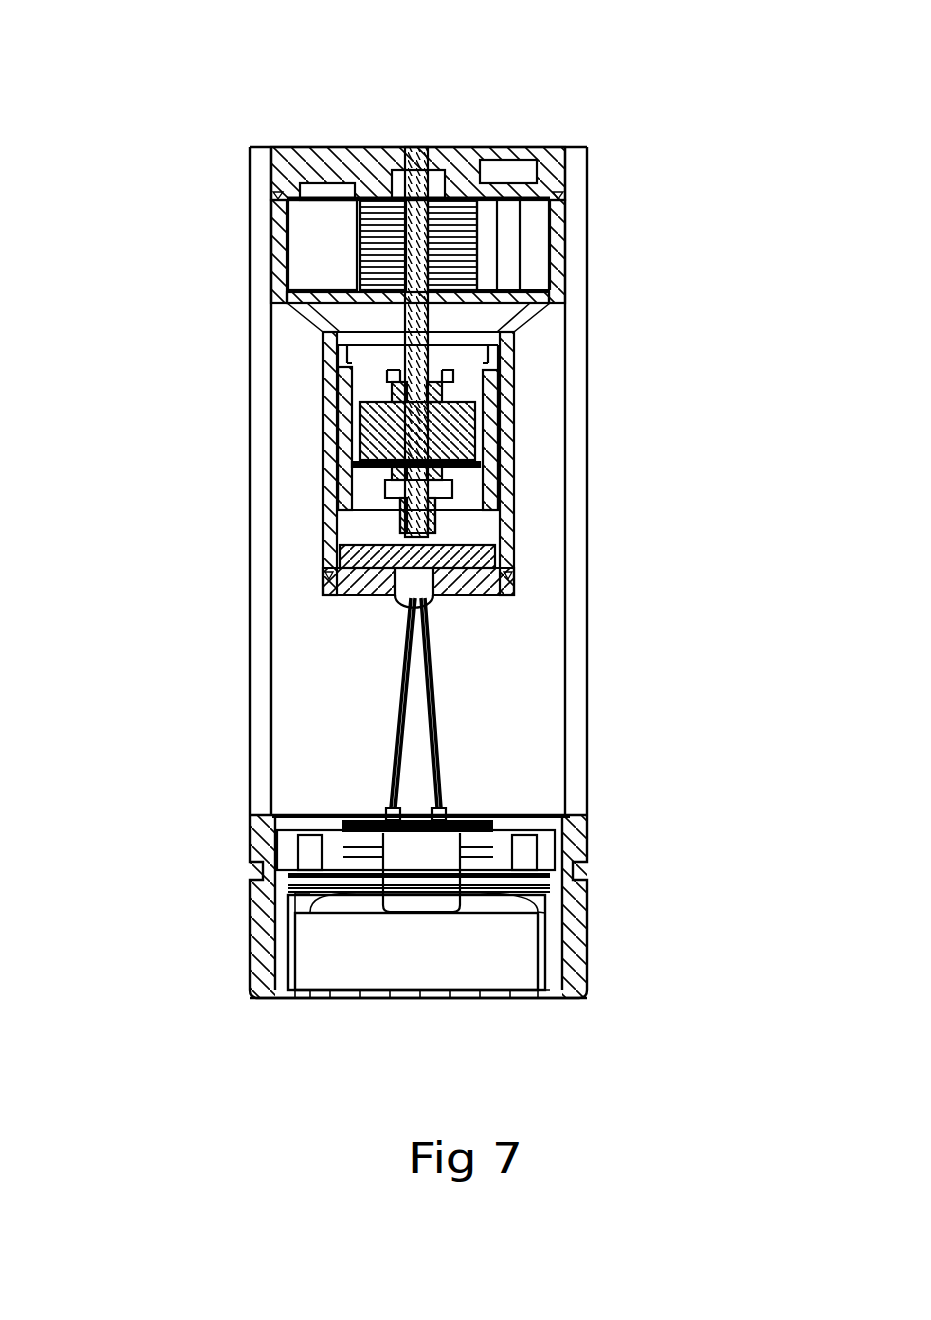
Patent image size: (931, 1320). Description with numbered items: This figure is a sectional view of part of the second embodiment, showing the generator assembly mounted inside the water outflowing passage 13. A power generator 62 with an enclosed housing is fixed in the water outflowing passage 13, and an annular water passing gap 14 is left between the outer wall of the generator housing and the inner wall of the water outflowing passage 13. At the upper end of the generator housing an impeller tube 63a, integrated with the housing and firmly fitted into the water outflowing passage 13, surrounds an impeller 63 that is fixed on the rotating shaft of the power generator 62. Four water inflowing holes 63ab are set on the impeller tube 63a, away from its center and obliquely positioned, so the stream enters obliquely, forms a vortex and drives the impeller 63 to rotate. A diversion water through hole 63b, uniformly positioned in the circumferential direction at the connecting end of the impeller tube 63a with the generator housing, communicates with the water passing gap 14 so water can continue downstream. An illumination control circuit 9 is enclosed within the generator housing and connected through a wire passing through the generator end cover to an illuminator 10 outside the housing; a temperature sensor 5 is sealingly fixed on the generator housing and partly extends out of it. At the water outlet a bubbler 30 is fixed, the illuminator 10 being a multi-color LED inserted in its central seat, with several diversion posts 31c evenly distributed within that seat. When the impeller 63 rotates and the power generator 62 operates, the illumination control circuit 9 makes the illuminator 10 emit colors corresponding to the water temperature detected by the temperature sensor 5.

The water inflowing holes 63ab is at (333, 152).
The impeller tube 63a is at (290, 228).
The impeller 63 is at (500, 240).
The diversion water through hole 63b is at (498, 315).
The power generator 62 is at (507, 427).
The annular water passing gap 14 is at (287, 465).
The illumination control circuit 9 is at (478, 543).
The water outflowing passage 13 is at (567, 648).
The temperature sensor 5 is at (407, 590).
The illuminator 10 is at (455, 810).
The diversion posts 31c is at (492, 818).
The bubbler 30 is at (312, 860).